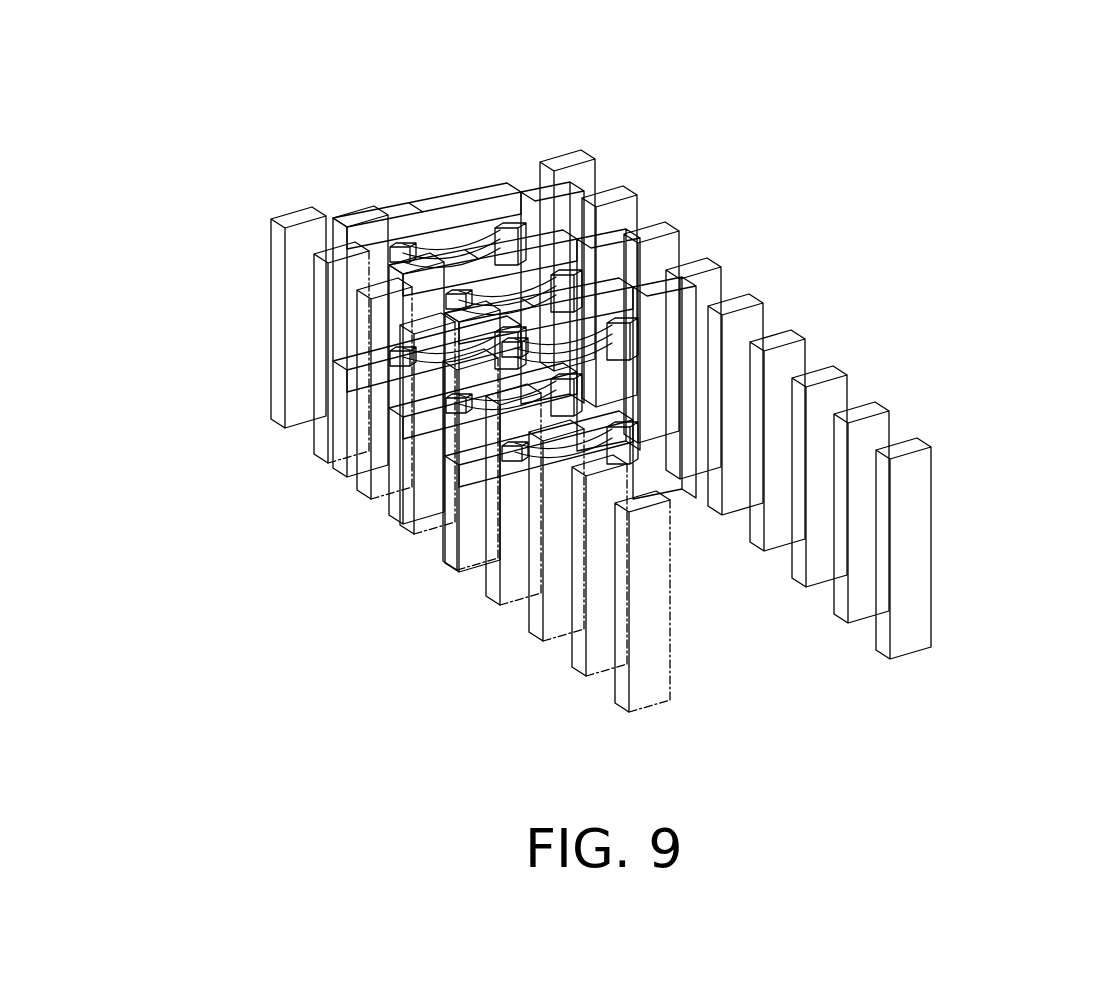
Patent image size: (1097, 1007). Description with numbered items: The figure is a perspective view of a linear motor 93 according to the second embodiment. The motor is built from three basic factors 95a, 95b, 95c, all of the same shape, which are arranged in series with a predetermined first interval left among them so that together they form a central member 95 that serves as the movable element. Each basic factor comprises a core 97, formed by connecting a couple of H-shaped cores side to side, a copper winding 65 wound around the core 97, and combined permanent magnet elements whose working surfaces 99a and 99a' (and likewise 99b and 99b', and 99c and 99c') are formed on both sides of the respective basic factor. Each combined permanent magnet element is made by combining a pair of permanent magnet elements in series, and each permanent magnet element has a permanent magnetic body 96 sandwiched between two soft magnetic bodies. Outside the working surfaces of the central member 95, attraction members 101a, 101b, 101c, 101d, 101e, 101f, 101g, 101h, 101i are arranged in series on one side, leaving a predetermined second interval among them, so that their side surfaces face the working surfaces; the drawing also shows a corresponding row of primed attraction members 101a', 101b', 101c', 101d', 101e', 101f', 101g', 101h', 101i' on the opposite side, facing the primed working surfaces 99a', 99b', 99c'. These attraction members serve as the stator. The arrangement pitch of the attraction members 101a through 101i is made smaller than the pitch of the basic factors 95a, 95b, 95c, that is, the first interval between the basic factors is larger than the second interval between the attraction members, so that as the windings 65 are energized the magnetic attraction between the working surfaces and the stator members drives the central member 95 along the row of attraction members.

The linear motor 93 is at (954, 227).
The central member 95 is at (660, 74).
The basic factor 95a is at (450, 180).
The basic factor 95b is at (502, 240).
The basic factor 95c is at (557, 282).
The permanent magnetic body 96 is at (632, 345).
The core 97 is at (600, 270).
The working surface 99a is at (609, 247).
The working surface 99b is at (683, 275).
The working surface 99c is at (729, 336).
The working surface 99a' is at (281, 341).
The working surface 99b' is at (329, 388).
The working surface 99c' is at (415, 451).
The copper winding 65 is at (672, 315).
The attraction member 101a is at (593, 238).
The attraction member 101b is at (637, 272).
The attraction member 101c is at (689, 304).
The attraction member 101d is at (737, 340).
The attraction member 101e is at (786, 374).
The attraction member 101f is at (822, 411).
The attraction member 101g is at (862, 447).
The attraction member 101h is at (904, 481).
The attraction member 101i is at (946, 517).
The lower pole bar 101a' is at (243, 317).
The lower pole bar 101b' is at (310, 385).
The lower pole bar 101c' is at (342, 415).
The lower pole bar 101d' is at (419, 464).
The lower pole bar 101e' is at (442, 499).
The lower pole bar 101f' is at (505, 533).
The lower pole bar 101g' is at (536, 572).
The lower pole bar 101h' is at (580, 604).
The lower pole bar 101i' is at (638, 636).